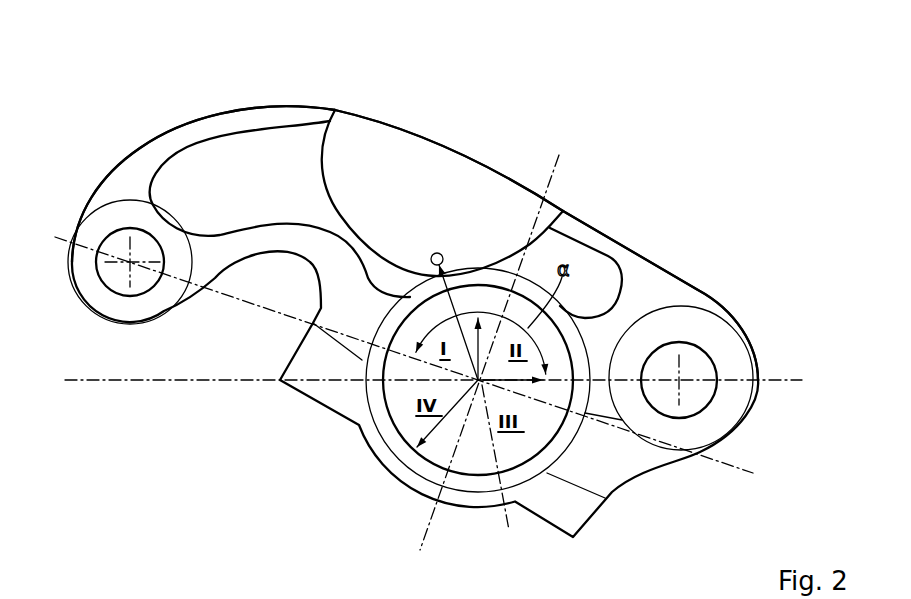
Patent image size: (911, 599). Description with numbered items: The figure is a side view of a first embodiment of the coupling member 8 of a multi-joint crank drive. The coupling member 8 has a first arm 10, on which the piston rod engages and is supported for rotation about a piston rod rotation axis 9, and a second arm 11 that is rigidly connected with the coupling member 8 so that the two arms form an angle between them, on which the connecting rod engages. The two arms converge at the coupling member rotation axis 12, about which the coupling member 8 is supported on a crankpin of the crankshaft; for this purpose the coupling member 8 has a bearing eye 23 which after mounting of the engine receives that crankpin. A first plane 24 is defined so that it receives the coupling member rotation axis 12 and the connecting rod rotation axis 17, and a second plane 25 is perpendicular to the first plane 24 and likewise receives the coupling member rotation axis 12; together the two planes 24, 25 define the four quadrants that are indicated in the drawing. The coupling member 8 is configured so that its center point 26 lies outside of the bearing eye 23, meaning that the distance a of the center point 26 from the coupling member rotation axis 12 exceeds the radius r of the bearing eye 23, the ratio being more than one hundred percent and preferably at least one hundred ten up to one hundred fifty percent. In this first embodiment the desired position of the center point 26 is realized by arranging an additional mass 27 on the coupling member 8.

The coupling member 8 is at (667, 184).
The piston rod rotation axis 9 is at (683, 378).
The first arm 10 is at (701, 268).
The second arm 11 is at (243, 98).
The coupling member rotation axis 12 is at (505, 466).
The connecting rod rotation axis 17 is at (130, 263).
The bearing eye 23 is at (477, 443).
The first plane 24 is at (718, 462).
The second plane 25 is at (547, 157).
The center point 26 is at (437, 252).
The additional mass 27 is at (388, 145).
The distance a is at (456, 300).
The radius r is at (452, 403).